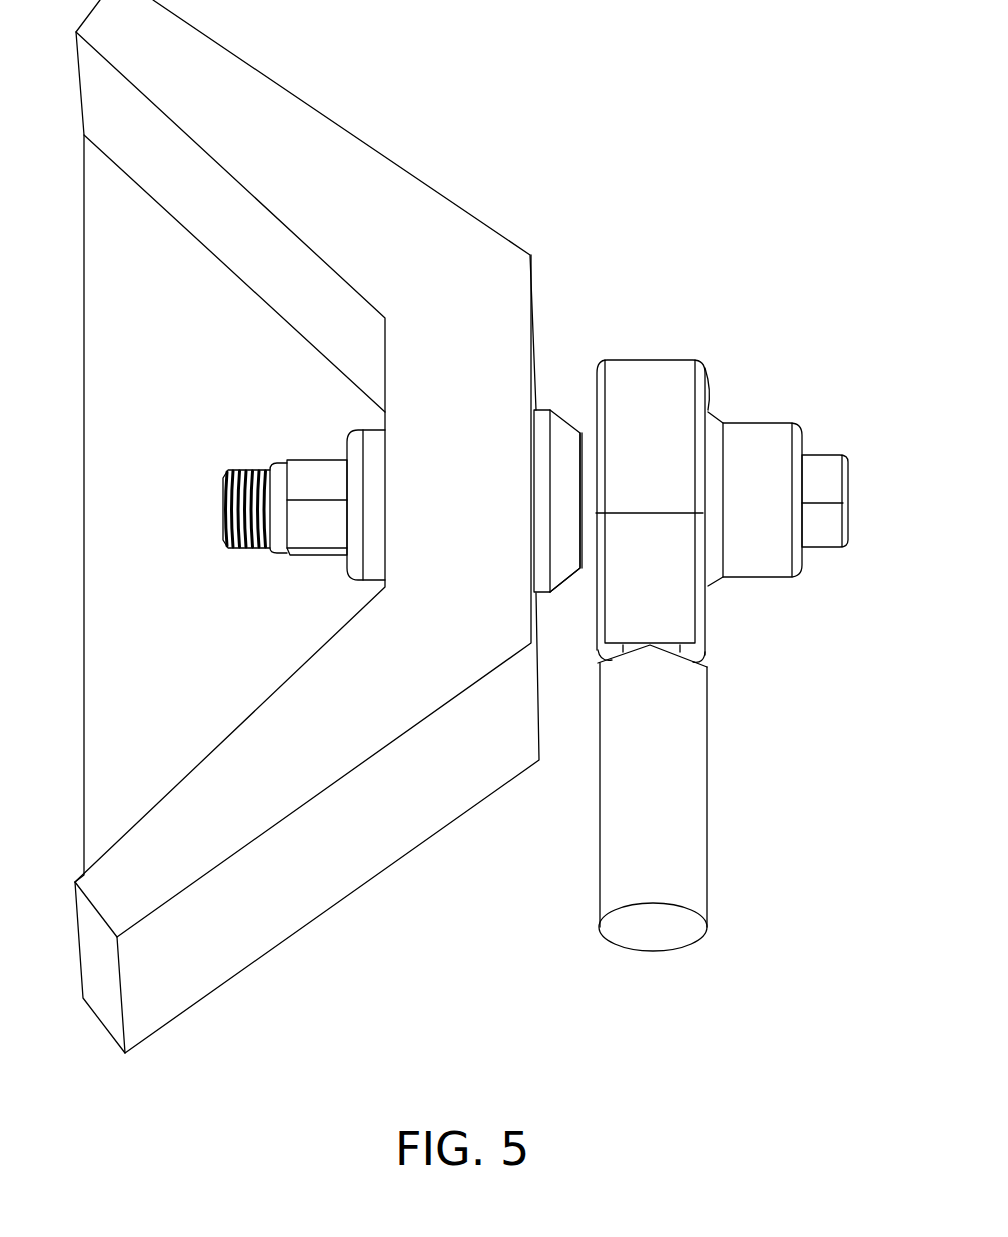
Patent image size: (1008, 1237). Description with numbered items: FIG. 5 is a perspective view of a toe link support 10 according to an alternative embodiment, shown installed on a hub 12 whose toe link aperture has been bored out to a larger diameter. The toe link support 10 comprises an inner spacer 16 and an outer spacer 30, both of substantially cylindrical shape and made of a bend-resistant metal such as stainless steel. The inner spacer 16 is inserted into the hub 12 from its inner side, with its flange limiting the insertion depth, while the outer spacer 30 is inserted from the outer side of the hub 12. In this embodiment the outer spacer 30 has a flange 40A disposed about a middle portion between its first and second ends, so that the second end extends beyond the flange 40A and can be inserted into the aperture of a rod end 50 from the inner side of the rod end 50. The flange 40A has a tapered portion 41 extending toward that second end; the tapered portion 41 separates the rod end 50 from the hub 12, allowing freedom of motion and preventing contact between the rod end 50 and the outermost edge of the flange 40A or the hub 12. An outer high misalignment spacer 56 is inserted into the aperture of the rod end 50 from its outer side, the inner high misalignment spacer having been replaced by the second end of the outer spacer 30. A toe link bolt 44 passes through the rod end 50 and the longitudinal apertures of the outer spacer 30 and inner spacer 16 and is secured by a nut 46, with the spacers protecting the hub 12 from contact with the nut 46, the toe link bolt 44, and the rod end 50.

The toe link support 10 is at (630, 116).
The hub 12 is at (385, 183).
The inner spacer 16 is at (373, 448).
The outer spacer 30 is at (560, 436).
The flange 40A is at (543, 586).
The tapered portion 41 is at (560, 578).
The toe link bolt 44 is at (227, 502).
The nut 46 is at (305, 485).
The rod end 50 is at (657, 385).
The outer high misalignment spacer 56 is at (763, 447).